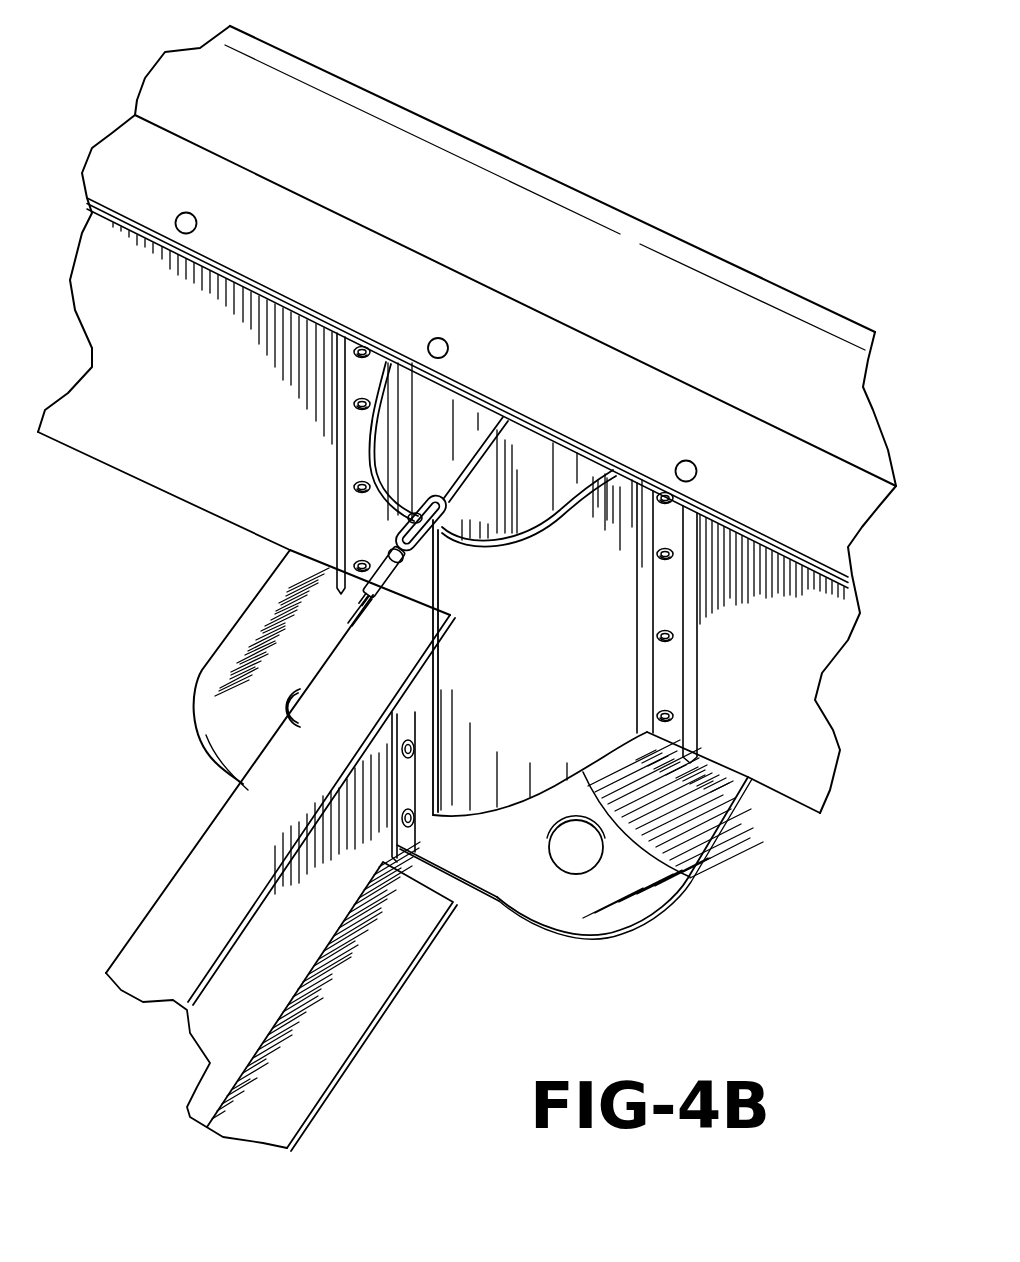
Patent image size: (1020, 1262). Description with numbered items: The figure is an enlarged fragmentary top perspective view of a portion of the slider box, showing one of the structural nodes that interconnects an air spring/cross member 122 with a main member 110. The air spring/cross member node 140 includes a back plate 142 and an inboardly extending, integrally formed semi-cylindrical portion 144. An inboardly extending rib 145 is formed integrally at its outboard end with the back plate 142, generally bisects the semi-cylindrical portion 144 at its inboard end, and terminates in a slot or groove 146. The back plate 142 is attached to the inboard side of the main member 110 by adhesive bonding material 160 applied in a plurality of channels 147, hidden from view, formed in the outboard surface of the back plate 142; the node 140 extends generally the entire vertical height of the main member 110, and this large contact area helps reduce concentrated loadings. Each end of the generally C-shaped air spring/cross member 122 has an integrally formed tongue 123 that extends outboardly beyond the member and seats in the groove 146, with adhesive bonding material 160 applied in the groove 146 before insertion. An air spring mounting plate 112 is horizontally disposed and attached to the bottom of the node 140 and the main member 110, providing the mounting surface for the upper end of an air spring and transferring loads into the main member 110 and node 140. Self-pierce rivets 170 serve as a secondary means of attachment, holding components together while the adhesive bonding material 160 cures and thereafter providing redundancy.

The main member 110 is at (582, 187).
The air spring mounting plate 112 is at (212, 660).
The air spring/cross member 122 is at (197, 843).
The tongue 123 is at (383, 588).
The air spring/cross member node 140 is at (502, 819).
The back plate 142 is at (670, 730).
The semi-cylindrical portion 144 is at (628, 854).
The rib 145 is at (496, 417).
The groove 146 is at (408, 516).
The channels 147 is at (470, 410).
The adhesive bonding material 160 is at (448, 522).
The self-pierce rivets 170 is at (356, 568).